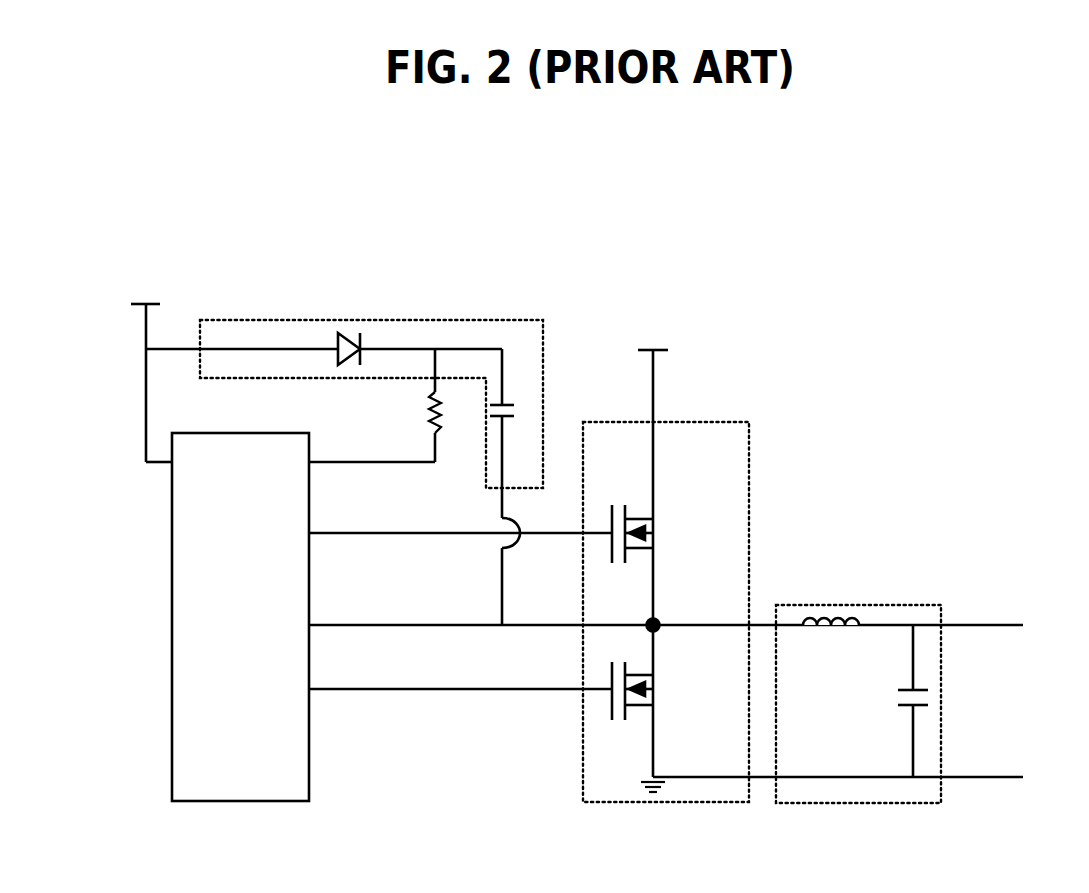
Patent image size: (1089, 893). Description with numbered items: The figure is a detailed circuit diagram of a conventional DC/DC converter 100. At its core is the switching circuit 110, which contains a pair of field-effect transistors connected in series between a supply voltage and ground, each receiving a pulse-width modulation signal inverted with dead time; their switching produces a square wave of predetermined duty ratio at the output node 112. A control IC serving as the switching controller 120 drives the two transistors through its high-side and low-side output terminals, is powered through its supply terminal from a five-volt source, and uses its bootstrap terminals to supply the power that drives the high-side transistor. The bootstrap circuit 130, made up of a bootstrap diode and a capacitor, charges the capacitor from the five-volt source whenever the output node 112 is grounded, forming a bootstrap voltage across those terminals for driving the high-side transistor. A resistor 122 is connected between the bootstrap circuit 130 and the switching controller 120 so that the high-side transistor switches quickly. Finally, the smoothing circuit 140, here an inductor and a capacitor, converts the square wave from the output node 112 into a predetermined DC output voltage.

The DC/DC converter 100 is at (258, 149).
The switching circuit 110 is at (697, 422).
The output node 112 is at (657, 620).
The switching controller 120 is at (309, 787).
The resistor 122 is at (375, 405).
The bootstrap circuit 130 is at (506, 320).
The smoothing circuit 140 is at (858, 605).